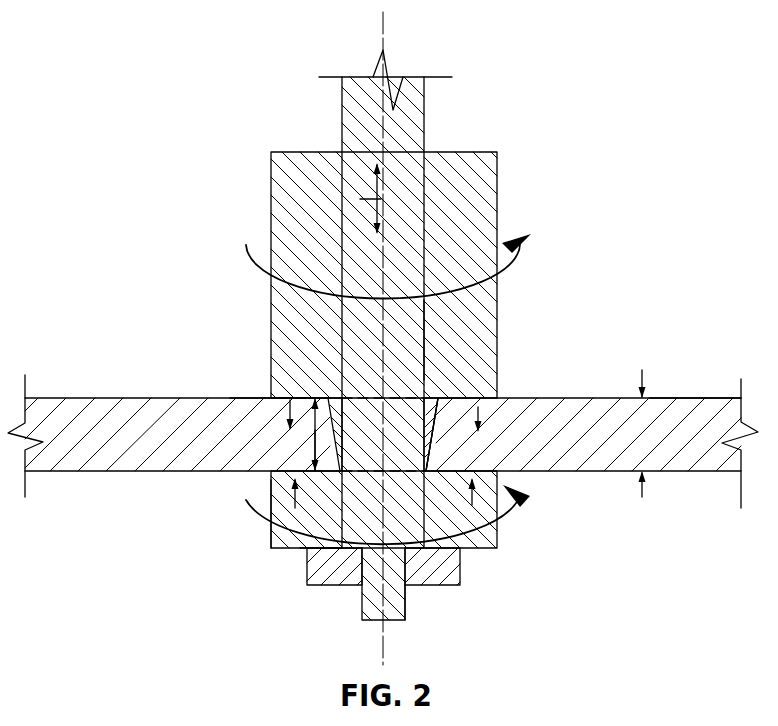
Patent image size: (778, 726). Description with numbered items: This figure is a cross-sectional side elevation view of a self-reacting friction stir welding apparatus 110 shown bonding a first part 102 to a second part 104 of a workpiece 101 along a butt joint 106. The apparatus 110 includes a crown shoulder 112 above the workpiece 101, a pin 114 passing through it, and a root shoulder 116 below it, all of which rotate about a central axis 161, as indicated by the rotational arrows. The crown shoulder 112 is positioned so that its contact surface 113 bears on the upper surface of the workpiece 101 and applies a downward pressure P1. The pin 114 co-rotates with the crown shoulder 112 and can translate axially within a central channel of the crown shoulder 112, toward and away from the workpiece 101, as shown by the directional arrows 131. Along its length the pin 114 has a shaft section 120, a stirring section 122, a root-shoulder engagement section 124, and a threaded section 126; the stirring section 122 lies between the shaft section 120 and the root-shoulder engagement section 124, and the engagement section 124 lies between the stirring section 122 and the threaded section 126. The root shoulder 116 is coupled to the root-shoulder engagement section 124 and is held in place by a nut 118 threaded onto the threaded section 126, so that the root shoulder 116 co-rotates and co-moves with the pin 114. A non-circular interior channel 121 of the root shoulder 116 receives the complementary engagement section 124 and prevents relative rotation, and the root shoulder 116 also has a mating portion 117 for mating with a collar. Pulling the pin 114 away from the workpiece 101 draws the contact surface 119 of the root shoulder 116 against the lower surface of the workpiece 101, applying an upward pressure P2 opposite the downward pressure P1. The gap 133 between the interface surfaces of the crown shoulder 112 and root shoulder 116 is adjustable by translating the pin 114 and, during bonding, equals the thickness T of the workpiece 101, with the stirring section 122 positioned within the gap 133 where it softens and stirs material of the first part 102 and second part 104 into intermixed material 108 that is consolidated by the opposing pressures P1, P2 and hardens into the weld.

The workpiece 101 is at (696, 392).
The first part 102 is at (90, 420).
The second part 104 is at (675, 420).
The joint 106 is at (440, 392).
The intermixed material 108 is at (334, 388).
The self-reacting friction stir welding apparatus 110 is at (552, 75).
The crown shoulder 112 is at (490, 180).
The contact surface 113 is at (252, 398).
The pin 114 is at (430, 338).
The root shoulder 116 is at (473, 504).
The mating portion 117 is at (260, 534).
The nut 118 is at (326, 574).
The contact surface 119 is at (312, 466).
The shaft section 120 is at (410, 122).
The interior channel 121 is at (412, 520).
The stirring section 122 is at (430, 466).
The root-shoulder engagement section 124 is at (343, 529).
The threaded section 126 is at (406, 595).
The directional arrows 131 is at (360, 199).
The gap 133 is at (312, 455).
The central axis 161 is at (384, 22).
The downward pressure P1 is at (290, 400).
The upward pressure P2 is at (293, 503).
The thickness T is at (643, 496).